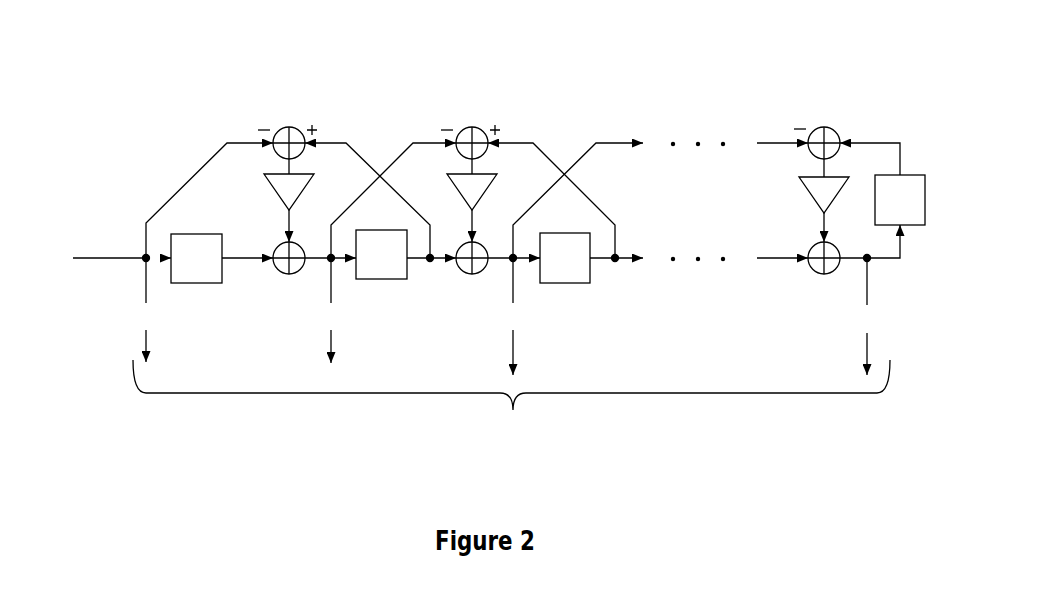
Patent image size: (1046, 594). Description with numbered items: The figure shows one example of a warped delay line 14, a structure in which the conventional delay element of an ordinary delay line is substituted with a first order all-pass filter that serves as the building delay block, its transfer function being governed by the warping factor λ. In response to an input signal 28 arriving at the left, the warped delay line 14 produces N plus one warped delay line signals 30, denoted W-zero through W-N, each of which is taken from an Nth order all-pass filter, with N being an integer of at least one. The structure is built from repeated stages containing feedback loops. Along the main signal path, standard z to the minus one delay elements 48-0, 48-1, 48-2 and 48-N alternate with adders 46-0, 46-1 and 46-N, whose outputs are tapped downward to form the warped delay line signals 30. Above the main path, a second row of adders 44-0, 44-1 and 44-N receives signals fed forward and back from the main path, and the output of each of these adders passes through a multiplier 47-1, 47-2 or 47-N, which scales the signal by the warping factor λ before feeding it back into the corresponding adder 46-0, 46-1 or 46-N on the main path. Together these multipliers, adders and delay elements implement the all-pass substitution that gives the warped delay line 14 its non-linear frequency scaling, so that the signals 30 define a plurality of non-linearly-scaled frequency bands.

The warped delay line 14 is at (268, 88).
The signal 28 is at (118, 258).
The warped delay line signals 30 is at (438, 394).
The adder 44-0 is at (300, 132).
The adder 44-1 is at (483, 132).
The adder 44-N is at (827, 127).
The adder 46-0 is at (283, 273).
The adder 46-1 is at (467, 275).
The adder 46-N is at (813, 272).
The multiplier 47-1 is at (263, 175).
The multiplier 47-2 is at (493, 175).
The multiplier 47-N is at (798, 178).
The delay element 48-0 is at (193, 283).
The delay element 48-1 is at (382, 279).
The delay element 48-2 is at (553, 283).
The delay element 48-N is at (925, 175).